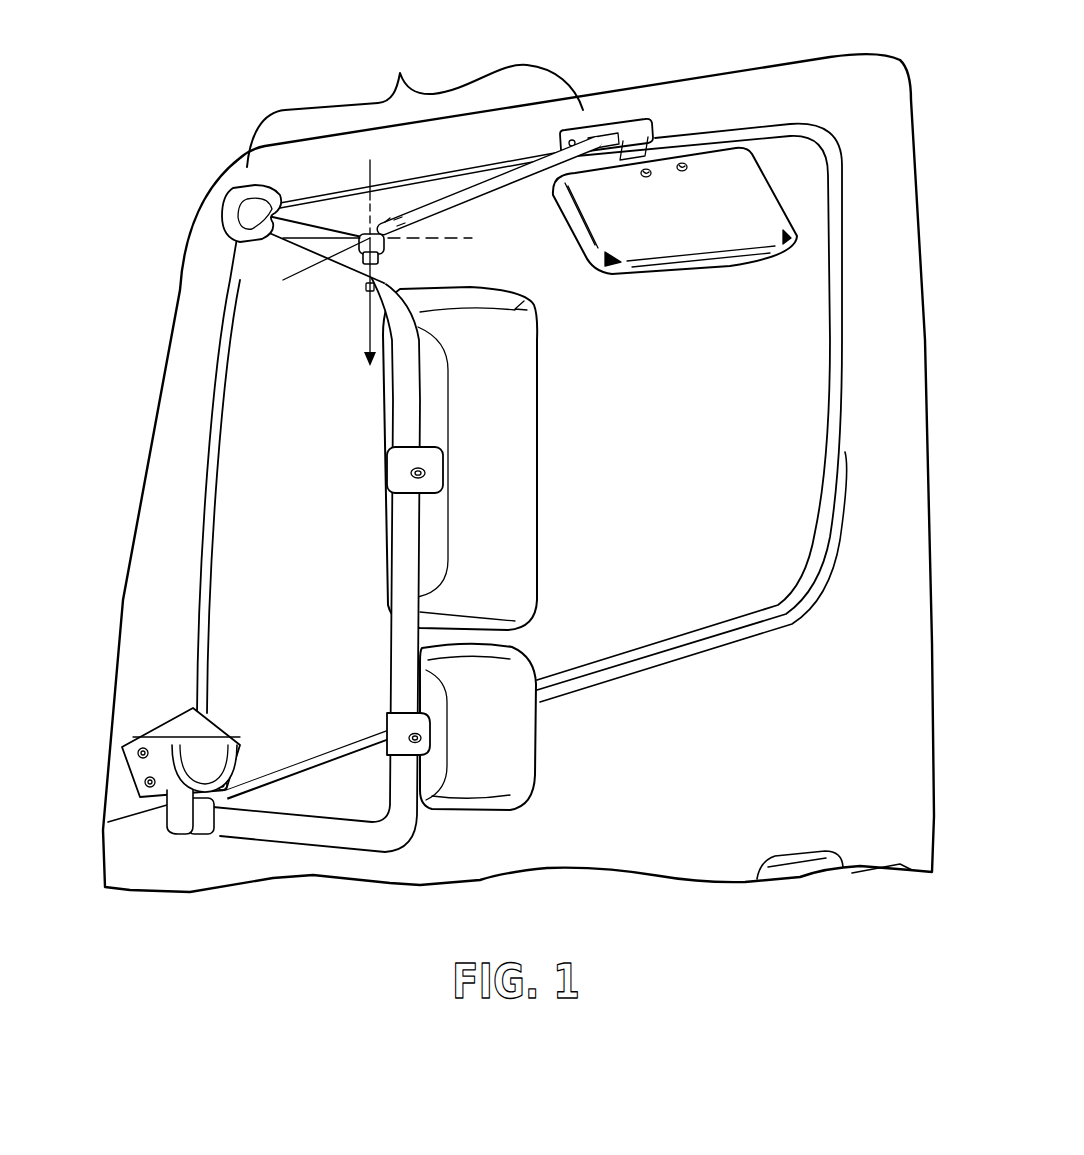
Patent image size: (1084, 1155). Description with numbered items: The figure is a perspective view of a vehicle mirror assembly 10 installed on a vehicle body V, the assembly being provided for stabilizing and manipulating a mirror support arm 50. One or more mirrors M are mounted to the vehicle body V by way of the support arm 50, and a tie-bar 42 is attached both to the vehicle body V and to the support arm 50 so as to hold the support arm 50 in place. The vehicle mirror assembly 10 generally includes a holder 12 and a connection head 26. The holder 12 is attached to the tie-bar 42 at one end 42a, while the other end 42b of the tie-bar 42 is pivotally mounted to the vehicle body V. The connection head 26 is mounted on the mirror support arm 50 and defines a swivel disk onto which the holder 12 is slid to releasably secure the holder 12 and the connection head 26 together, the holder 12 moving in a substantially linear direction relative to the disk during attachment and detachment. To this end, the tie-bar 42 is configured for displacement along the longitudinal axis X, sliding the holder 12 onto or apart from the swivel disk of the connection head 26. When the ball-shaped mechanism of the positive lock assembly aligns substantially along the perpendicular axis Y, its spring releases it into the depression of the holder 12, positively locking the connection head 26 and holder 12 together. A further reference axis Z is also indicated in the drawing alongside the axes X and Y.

The vehicle mirror assembly 10 is at (393, 50).
The holder 12 is at (362, 233).
The connection head 26 is at (384, 256).
The tie-bar 42 is at (498, 191).
The one end of the tie-bar 42a is at (373, 206).
The another end of the tie-bar 42b is at (590, 114).
The mirror support arm 50 is at (257, 236).
The mirrors M is at (523, 460).
The vehicle body V is at (768, 711).
The longitudinal axis X is at (315, 267).
The perpendicular axis Y is at (369, 277).
The Z axis Z is at (394, 240).